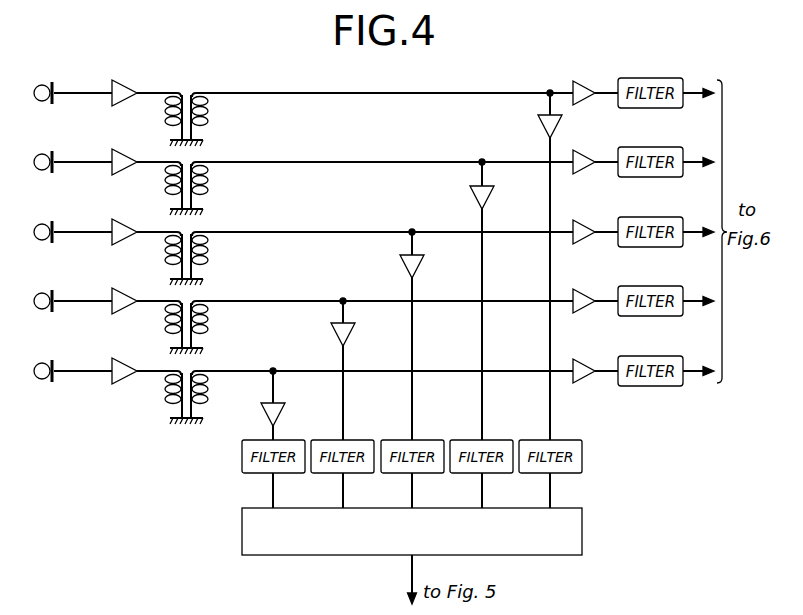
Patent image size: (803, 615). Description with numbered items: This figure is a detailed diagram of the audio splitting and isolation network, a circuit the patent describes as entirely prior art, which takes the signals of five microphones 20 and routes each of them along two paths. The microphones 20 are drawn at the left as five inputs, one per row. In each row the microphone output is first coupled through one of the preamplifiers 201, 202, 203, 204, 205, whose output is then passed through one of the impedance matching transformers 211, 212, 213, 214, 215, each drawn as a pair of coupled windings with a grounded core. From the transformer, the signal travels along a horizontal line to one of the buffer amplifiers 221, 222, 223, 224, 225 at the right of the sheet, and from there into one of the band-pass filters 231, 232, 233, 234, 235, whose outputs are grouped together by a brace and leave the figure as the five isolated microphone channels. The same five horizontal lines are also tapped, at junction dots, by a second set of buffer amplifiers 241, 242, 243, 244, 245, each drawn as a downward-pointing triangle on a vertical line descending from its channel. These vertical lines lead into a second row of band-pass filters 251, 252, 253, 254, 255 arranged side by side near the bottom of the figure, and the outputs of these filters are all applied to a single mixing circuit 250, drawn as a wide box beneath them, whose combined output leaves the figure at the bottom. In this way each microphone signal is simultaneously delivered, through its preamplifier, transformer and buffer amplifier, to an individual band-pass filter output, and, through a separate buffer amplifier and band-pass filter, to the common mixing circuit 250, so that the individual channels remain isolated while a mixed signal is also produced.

The microphones 20 is at (32, 387).
The preamplifier 201 is at (112, 80).
The preamplifier 202 is at (112, 149).
The preamplifier 203 is at (112, 219).
The preamplifier 204 is at (112, 288).
The preamplifier 205 is at (112, 358).
The impedance matching transformer 211 is at (191, 95).
The impedance matching transformer 212 is at (191, 164).
The impedance matching transformer 213 is at (191, 234).
The impedance matching transformer 214 is at (191, 303).
The impedance matching transformer 215 is at (191, 373).
The buffer amplifier 221 is at (585, 77).
The buffer amplifier 222 is at (585, 141).
The buffer amplifier 223 is at (585, 211).
The buffer amplifier 224 is at (585, 280).
The buffer amplifier 225 is at (585, 350).
The band-pass filter 231 is at (652, 108).
The band-pass filter 232 is at (652, 177).
The band-pass filter 233 is at (652, 247).
The band-pass filter 234 is at (652, 316).
The band-pass filter 235 is at (652, 386).
The buffer amplifier 241 is at (539, 123).
The buffer amplifier 242 is at (471, 192).
The buffer amplifier 243 is at (401, 262).
The buffer amplifier 244 is at (331, 334).
The buffer amplifier 245 is at (262, 406).
The band-pass filter 251 is at (276, 476).
The band-pass filter 252 is at (346, 476).
The band-pass filter 253 is at (415, 476).
The band-pass filter 254 is at (485, 476).
The band-pass filter 255 is at (553, 476).
The mixing circuit 250 is at (582, 535).